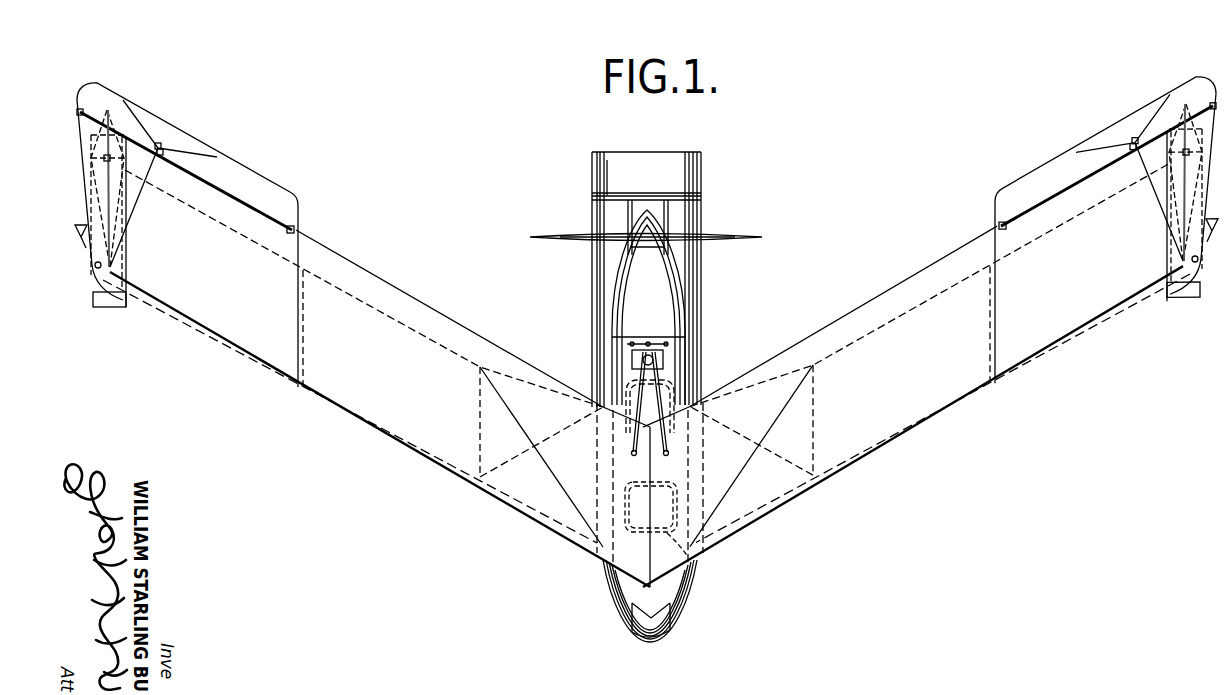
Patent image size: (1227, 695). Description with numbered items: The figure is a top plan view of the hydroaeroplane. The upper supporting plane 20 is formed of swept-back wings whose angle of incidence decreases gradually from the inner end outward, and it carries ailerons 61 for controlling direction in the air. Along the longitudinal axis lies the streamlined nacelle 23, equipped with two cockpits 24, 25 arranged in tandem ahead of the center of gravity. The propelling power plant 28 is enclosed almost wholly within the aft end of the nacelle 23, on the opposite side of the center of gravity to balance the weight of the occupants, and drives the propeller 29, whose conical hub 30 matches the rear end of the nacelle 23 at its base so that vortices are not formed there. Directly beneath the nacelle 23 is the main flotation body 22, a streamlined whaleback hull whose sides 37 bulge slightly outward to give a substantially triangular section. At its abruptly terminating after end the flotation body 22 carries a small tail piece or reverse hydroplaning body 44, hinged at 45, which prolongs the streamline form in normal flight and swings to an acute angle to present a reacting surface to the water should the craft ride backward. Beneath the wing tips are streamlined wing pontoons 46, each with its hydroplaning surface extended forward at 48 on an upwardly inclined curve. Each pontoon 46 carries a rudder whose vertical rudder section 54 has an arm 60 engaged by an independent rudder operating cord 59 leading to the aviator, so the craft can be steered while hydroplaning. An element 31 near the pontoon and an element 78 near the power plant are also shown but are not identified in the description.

The upper supporting plane 20 is at (646, 312).
The main flotation body 22 is at (652, 630).
The nacelle 23 is at (657, 604).
The cockpit 24 is at (707, 563).
The cockpit 25 is at (667, 395).
The propelling power plant 28 is at (648, 315).
The propeller 29 is at (722, 242).
The conical hub 30 is at (651, 222).
The wing tip fin 31 is at (112, 205).
The sides 37 is at (699, 297).
The tail piece or reverse hydroplaning body 44 is at (657, 160).
The hinge 45 is at (607, 190).
The wing pontoon 46 is at (125, 248).
The forward extension of hydroplaning surface 48 is at (125, 300).
The vertical rudder section 54 is at (87, 212).
The rudder operating cord 59 is at (216, 348).
The arm 60 is at (1183, 223).
The aileron 61 is at (197, 147).
The engine mount 78 is at (685, 347).